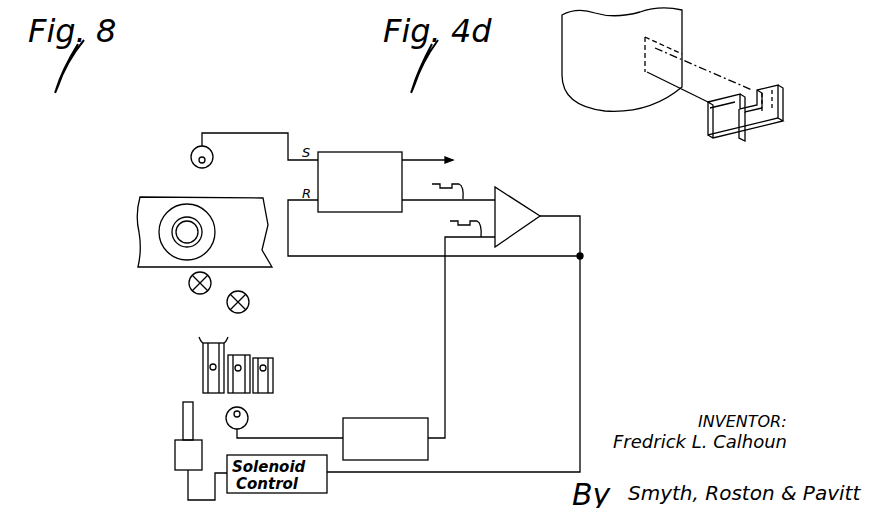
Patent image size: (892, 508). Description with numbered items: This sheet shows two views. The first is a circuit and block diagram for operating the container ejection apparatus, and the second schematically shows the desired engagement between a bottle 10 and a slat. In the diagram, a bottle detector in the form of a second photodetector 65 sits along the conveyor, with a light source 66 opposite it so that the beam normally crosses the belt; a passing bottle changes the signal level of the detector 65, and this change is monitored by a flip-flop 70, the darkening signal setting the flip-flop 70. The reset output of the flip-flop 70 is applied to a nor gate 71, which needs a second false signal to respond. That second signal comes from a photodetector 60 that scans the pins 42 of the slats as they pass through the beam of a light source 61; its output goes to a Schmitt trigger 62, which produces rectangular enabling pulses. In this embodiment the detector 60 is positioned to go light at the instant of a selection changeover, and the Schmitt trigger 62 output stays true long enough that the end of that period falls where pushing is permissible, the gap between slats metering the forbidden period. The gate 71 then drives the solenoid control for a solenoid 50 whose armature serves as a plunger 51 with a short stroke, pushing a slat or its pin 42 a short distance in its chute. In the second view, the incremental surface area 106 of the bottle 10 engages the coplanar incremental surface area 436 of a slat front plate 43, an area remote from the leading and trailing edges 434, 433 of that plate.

In FIG. 8, the bottle 10 is at (160, 219).
In FIG. 4D, the bottle 10 is at (562, 58).
In FIG. 8, the pin 42 is at (264, 350).
In FIG. 4D, the clip 43 is at (734, 124).
In FIG. 8, the solenoid 50 is at (175, 456).
In FIG. 8, the plunger 51 is at (183, 418).
In FIG. 8, the photodetector 60 is at (249, 418).
In FIG. 8, the light source 61 is at (249, 301).
In FIG. 8, the Schmitt trigger 62 is at (388, 418).
In FIG. 8, the second photodetector 65 is at (190, 163).
In FIG. 8, the light source 66 is at (190, 290).
In FIG. 8, the flip-flop 70 is at (380, 152).
In FIG. 8, the nor gate 71 is at (508, 207).
In FIG. 4D, the incremental surface area 106 is at (684, 44).
In FIG. 4D, the trailing edge 433 is at (714, 120).
In FIG. 4D, the leading edge 434 is at (783, 97).
In FIG. 4D, the incremental surface area 436 is at (746, 138).